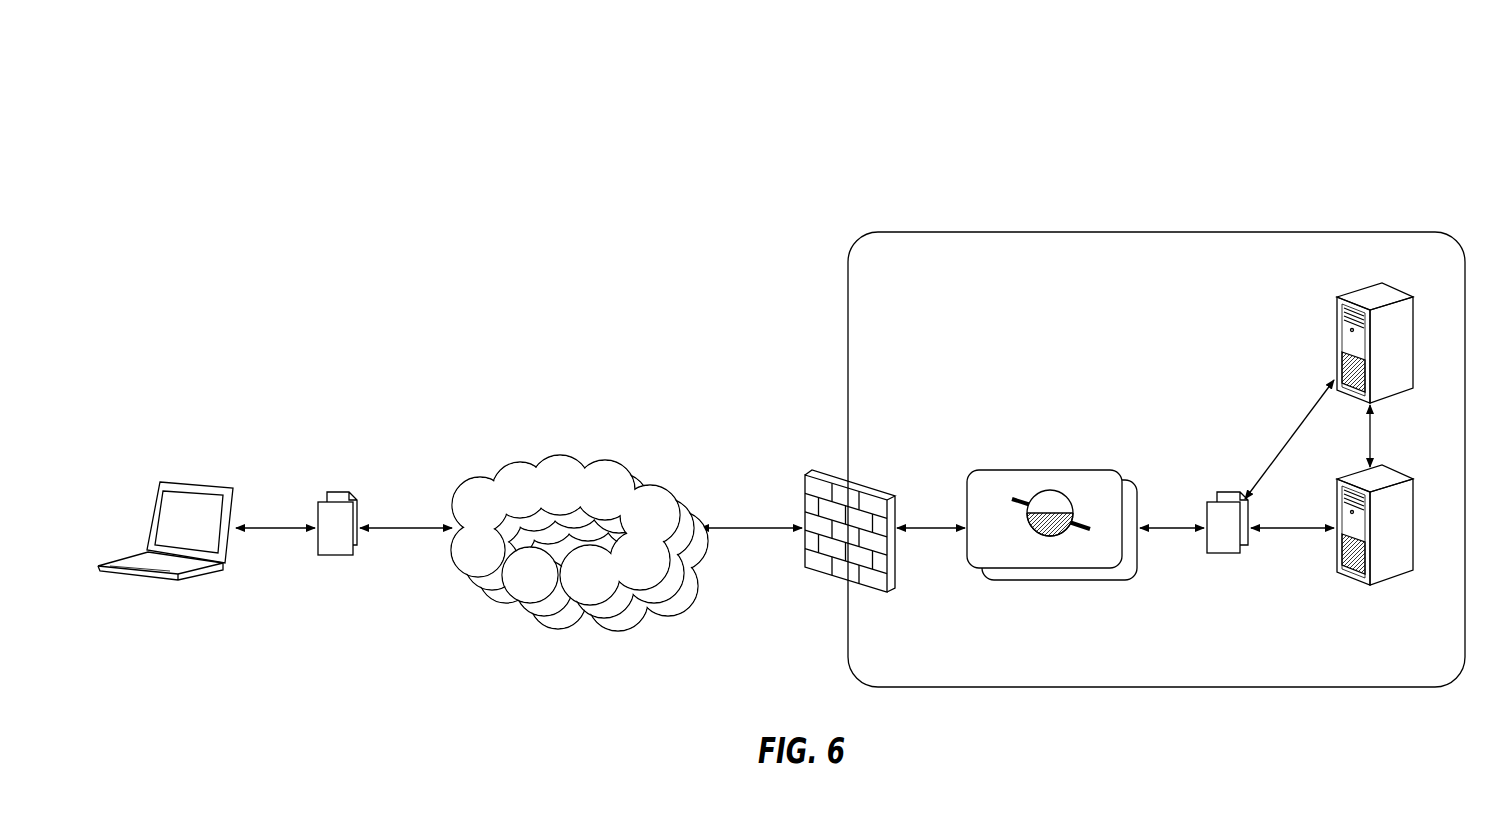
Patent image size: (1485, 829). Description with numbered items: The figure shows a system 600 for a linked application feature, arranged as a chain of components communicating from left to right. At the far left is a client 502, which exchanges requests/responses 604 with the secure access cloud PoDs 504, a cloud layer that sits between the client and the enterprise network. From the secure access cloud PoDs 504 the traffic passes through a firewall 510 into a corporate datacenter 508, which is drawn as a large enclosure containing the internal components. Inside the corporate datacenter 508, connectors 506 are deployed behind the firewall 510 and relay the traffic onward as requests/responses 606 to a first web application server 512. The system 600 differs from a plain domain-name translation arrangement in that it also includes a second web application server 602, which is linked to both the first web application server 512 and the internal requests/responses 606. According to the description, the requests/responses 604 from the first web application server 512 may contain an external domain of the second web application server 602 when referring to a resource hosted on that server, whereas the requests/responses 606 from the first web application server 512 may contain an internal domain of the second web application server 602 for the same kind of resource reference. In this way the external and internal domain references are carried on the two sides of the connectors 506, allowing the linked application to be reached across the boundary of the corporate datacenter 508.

The system 600 is at (1404, 104).
The client 502 is at (215, 482).
The requests/responses 604 is at (338, 492).
The secure access cloud PoDs 504 is at (576, 541).
The firewall 510 is at (829, 475).
The corporate datacenter 508 is at (1410, 232).
The connectors 506 is at (1078, 470).
The requests/responses 606 is at (1220, 492).
The second web application server 602 is at (1390, 285).
The web application server 512 is at (1392, 467).